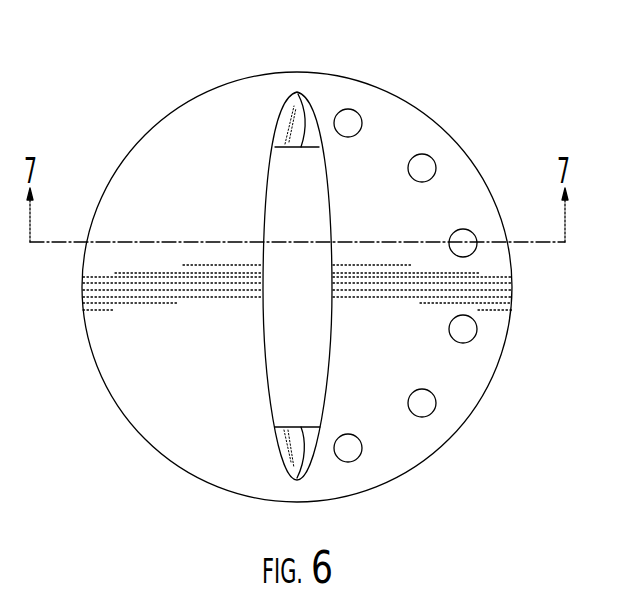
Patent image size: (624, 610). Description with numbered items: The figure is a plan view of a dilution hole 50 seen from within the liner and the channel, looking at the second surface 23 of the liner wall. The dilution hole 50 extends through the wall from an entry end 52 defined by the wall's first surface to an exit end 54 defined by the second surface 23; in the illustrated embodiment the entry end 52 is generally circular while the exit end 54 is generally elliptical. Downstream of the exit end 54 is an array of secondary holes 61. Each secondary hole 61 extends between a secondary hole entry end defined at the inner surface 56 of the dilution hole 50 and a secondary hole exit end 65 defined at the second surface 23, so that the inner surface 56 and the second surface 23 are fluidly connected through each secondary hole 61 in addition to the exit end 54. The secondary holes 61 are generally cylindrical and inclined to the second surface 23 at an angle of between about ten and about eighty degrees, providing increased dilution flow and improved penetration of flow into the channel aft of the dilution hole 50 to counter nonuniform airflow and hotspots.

The second surface 23 is at (196, 373).
The dilution hole 50 is at (243, 112).
The entry end 52 is at (263, 212).
The exit end 54 is at (302, 120).
The inner surface 56 is at (288, 447).
The secondary holes 61 is at (436, 316).
The secondary hole exit end 65 is at (421, 417).